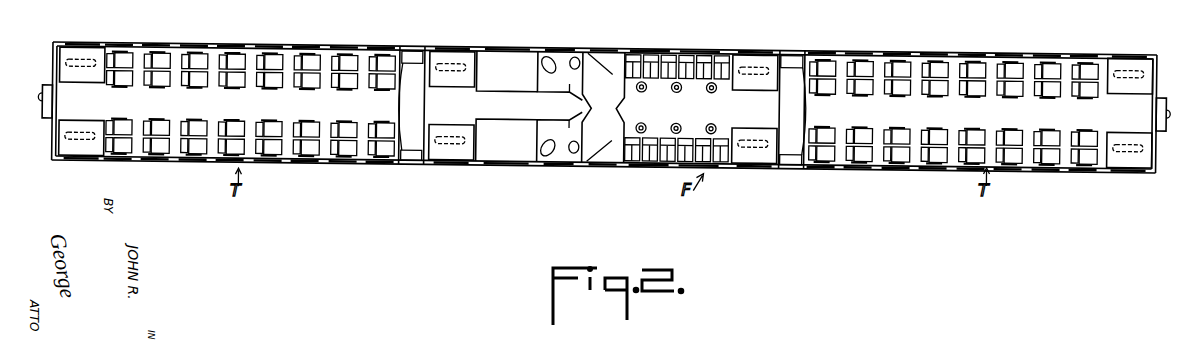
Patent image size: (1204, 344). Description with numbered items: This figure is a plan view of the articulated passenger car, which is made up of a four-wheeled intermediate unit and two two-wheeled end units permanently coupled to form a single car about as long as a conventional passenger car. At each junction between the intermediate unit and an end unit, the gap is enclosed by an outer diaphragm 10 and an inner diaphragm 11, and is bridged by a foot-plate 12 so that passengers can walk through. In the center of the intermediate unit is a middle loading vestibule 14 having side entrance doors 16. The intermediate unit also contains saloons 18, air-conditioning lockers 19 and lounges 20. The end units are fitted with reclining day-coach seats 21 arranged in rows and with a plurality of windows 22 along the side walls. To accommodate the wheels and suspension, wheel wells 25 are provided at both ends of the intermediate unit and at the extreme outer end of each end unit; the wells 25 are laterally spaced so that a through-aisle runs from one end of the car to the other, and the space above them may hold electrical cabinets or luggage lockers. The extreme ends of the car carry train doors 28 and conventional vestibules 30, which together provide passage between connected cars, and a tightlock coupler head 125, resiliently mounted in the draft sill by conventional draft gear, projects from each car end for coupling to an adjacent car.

The outer diaphragm 10 is at (405, 46).
The inner diaphragm 11 is at (426, 46).
The foot-plate 12 is at (412, 108).
The middle loading vestibule 14 is at (596, 111).
The side entrance door 16 is at (604, 60).
The saloon 18 is at (562, 52).
The air-conditioning locker 19 is at (490, 65).
The lounge 20 is at (685, 100).
The reclining day-coach seat 21 is at (935, 152).
The window 22 is at (215, 42).
The wheel well 25 is at (78, 50).
The train door 28 is at (58, 104).
The vestibule 30 is at (46, 118).
The tightlock coupler head 125 is at (42, 90).